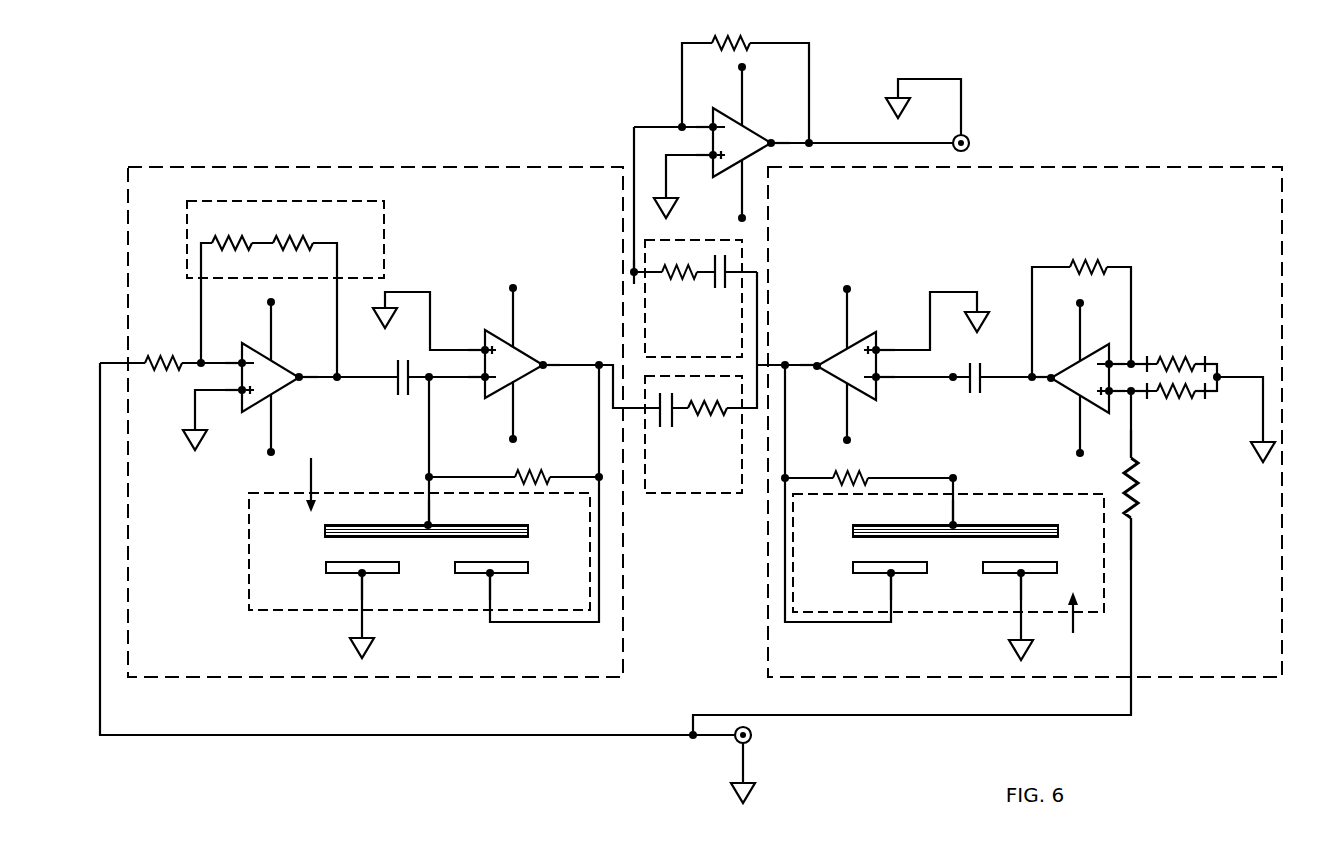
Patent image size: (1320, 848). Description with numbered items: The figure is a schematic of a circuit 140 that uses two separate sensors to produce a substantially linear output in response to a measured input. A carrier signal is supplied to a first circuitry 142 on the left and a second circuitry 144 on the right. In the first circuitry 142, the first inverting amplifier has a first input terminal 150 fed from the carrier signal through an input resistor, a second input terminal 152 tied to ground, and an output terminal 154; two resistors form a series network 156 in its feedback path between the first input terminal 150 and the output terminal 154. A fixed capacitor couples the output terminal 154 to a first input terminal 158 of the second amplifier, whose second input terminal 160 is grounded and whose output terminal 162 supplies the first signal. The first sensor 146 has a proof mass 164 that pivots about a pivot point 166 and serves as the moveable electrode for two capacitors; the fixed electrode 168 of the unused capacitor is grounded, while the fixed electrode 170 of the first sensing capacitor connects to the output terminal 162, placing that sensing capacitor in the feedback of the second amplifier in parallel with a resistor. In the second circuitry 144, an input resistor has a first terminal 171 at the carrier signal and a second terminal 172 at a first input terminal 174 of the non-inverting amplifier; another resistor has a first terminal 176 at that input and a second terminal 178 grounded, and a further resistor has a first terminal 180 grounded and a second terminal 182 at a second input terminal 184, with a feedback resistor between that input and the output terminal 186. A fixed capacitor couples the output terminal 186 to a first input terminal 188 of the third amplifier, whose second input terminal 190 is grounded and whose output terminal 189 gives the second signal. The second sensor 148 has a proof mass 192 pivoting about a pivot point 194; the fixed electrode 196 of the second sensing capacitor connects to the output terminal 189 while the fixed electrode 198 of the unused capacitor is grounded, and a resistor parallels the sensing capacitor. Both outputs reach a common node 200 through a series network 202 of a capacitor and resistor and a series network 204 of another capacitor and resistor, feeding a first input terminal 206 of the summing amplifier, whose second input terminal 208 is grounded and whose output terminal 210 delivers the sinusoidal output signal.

The circuit 140 is at (191, 109).
The first circuitry 142 is at (578, 196).
The second circuitry 144 is at (780, 196).
The first sensor 146 is at (419, 551).
The second sensor 148 is at (948, 553).
The first input terminal 150 is at (242, 361).
The second input terminal 152 is at (242, 392).
The output terminal 154 is at (299, 376).
The series network 156 is at (344, 226).
The first input terminal 158 is at (485, 378).
The second input terminal 160 is at (485, 350).
The output terminal 162 is at (543, 366).
The proof mass 164 is at (384, 525).
The pivot point 166 is at (430, 525).
The fixed electrode 168 is at (365, 575).
The fixed electrode 170 is at (493, 575).
The first terminal 171 is at (1131, 522).
The second terminal 172 is at (1131, 462).
The first input terminal 174 is at (1109, 394).
The first terminal 176 is at (1147, 394).
The second terminal 178 is at (1205, 391).
The first terminal 180 is at (1205, 364).
The second terminal 182 is at (1147, 360).
The second input terminal 184 is at (1109, 362).
The output terminal 186 is at (1051, 379).
The first input terminal 188 is at (876, 378).
The output terminal 189 is at (817, 367).
The second input terminal 190 is at (876, 350).
The proof mass 192 is at (1000, 527).
The pivot point 194 is at (953, 525).
The fixed electrode 196 is at (888, 575).
The fixed electrode 198 is at (1018, 575).
The common node 200 is at (634, 272).
The series network 202 is at (678, 492).
The series network 204 is at (678, 356).
The first input terminal 206 is at (713, 126).
The second input terminal 208 is at (713, 157).
The output terminal 210 is at (771, 142).